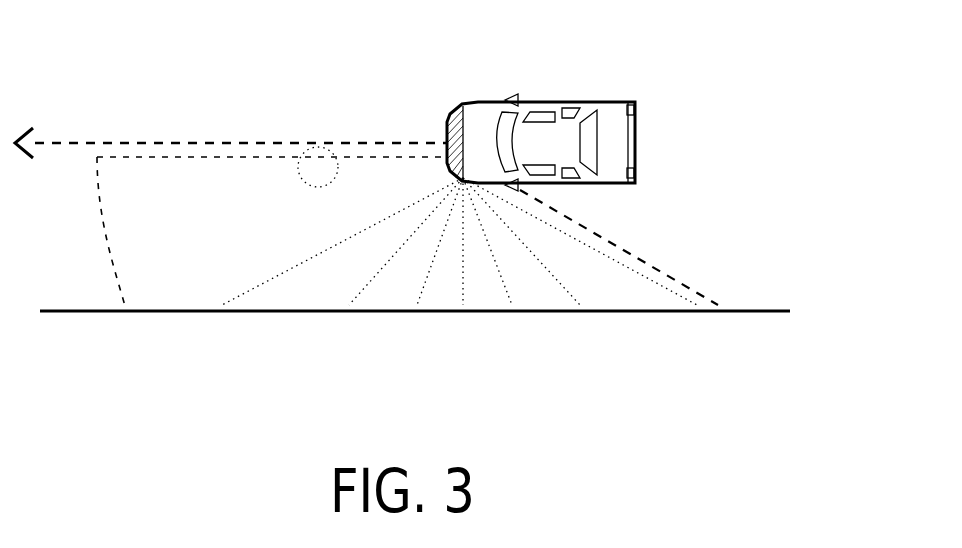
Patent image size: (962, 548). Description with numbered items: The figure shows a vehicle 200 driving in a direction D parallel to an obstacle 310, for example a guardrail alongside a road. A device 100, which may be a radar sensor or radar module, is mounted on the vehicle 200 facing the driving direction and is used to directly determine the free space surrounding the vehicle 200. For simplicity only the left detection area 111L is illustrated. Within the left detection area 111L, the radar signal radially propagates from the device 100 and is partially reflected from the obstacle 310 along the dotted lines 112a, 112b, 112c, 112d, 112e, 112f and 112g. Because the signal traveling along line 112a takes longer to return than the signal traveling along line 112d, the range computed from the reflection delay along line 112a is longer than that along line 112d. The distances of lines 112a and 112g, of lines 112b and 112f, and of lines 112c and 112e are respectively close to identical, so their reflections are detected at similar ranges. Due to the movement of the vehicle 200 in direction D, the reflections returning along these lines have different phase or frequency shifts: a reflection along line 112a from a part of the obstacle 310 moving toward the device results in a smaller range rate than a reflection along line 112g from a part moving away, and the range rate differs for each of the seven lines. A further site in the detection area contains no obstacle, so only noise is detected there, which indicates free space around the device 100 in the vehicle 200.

The direction D is at (27, 123).
The device 100 is at (460, 108).
The vehicle 200 is at (578, 90).
The left detection area 111L is at (160, 188).
The dotted line 112a is at (265, 283).
The dotted line 112b is at (367, 283).
The dotted line 112c is at (423, 283).
The dotted line 112d is at (463, 283).
The dotted line 112e is at (503, 283).
The dotted line 112f is at (558, 283).
The dotted line 112g is at (663, 283).
The obstacle 310 is at (773, 305).